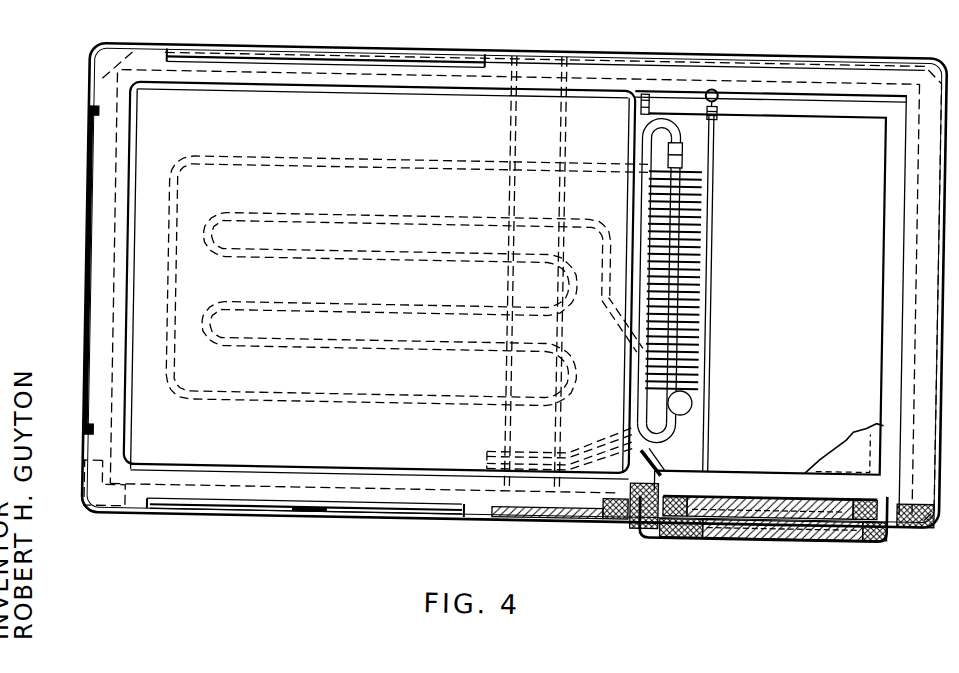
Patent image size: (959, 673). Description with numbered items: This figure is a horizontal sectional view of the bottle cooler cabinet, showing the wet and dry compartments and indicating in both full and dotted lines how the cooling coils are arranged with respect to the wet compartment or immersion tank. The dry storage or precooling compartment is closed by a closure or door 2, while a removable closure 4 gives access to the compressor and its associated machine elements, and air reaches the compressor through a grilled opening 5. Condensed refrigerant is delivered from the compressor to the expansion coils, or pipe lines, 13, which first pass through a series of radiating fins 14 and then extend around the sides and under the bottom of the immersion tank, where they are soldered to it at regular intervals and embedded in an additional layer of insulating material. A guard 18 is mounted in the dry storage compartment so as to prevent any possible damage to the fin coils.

The closure or door 2 is at (726, 528).
The removable closure 4 is at (388, 505).
The grilled opening 5 is at (93, 205).
The expansion coils 13 is at (136, 114).
The radiating fins 14 is at (706, 218).
The guard 18 is at (715, 319).